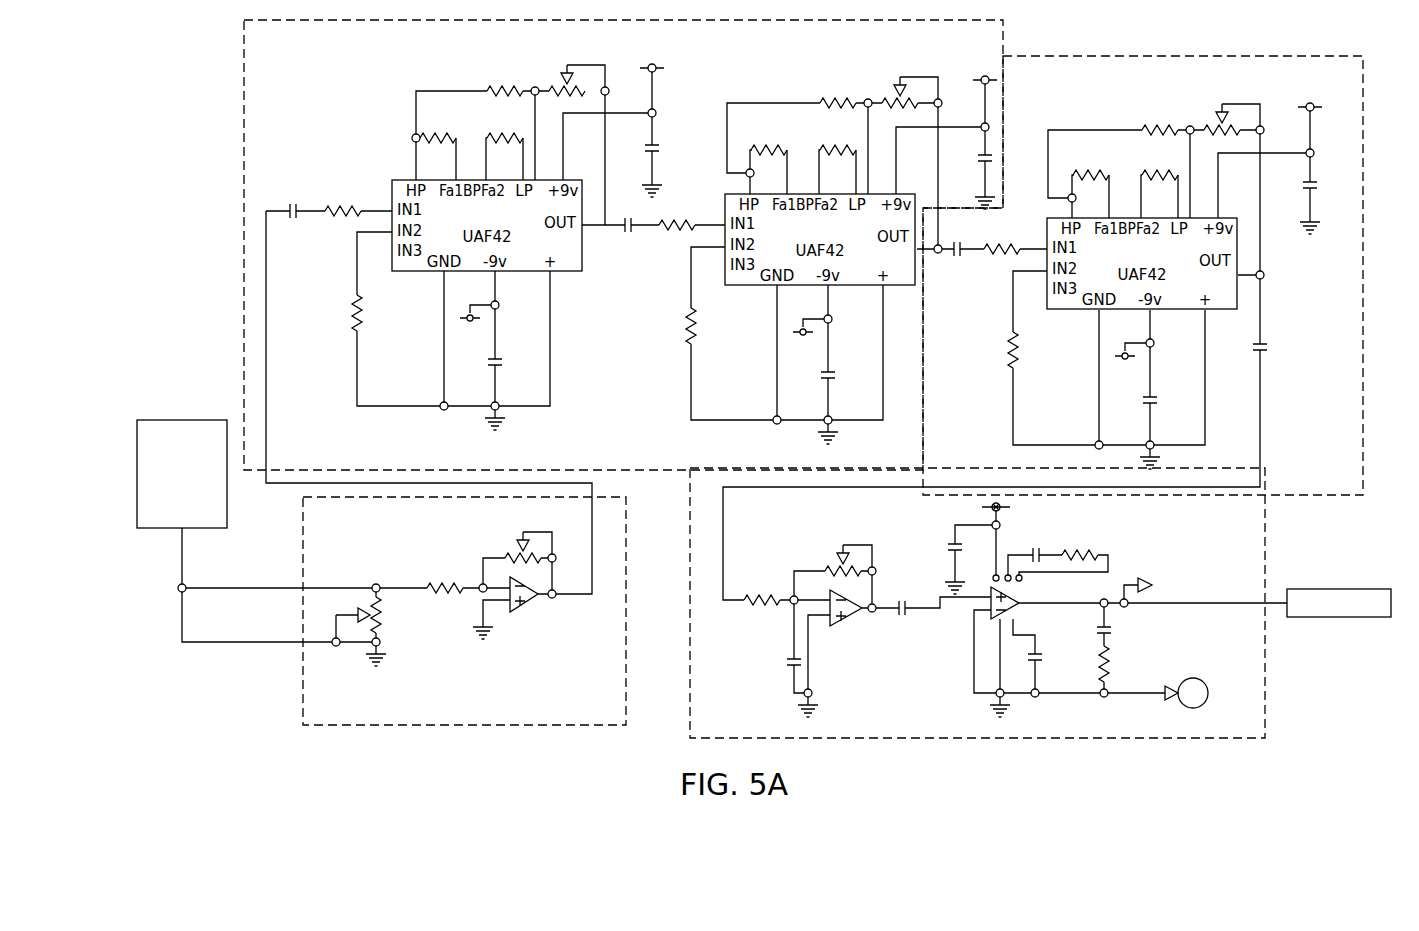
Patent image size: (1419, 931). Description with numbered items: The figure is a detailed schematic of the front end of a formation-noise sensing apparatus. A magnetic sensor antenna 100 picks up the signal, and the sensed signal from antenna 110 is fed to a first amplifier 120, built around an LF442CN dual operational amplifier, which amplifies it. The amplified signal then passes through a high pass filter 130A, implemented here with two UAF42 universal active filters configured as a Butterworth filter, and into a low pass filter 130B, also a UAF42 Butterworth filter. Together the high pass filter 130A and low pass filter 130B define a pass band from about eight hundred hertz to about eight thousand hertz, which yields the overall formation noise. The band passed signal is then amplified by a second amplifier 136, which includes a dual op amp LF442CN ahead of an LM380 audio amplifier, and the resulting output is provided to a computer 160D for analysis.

The antenna 100 is at (177, 420).
The antenna 110 is at (182, 553).
The first amplifier 120 is at (425, 725).
The high pass filter 130A is at (244, 40).
The low pass filter 130B is at (1203, 33).
The second amplifier 136 is at (1005, 738).
The computer 160D is at (1333, 617).